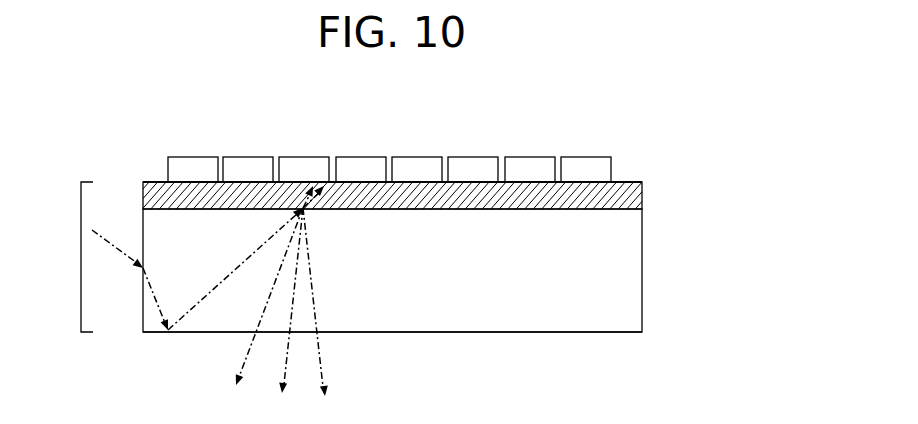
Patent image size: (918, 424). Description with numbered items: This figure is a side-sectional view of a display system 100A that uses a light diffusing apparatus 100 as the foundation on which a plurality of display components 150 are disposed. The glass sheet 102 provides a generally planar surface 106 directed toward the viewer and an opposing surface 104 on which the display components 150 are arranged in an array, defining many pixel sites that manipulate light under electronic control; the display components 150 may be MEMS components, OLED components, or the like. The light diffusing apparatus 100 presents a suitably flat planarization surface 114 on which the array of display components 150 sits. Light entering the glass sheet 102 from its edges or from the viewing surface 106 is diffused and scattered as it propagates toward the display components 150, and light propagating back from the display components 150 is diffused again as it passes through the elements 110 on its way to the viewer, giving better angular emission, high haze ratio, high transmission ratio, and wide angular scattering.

The display system 100A is at (262, 81).
The light diffusing apparatus 100 is at (81, 257).
The glass sheet 102 is at (642, 307).
The opposing surface 104 is at (427, 210).
The planar surface 106 is at (492, 333).
The elements 110 is at (643, 196).
The planarization surface 114 is at (625, 182).
The display components 150 is at (415, 157).